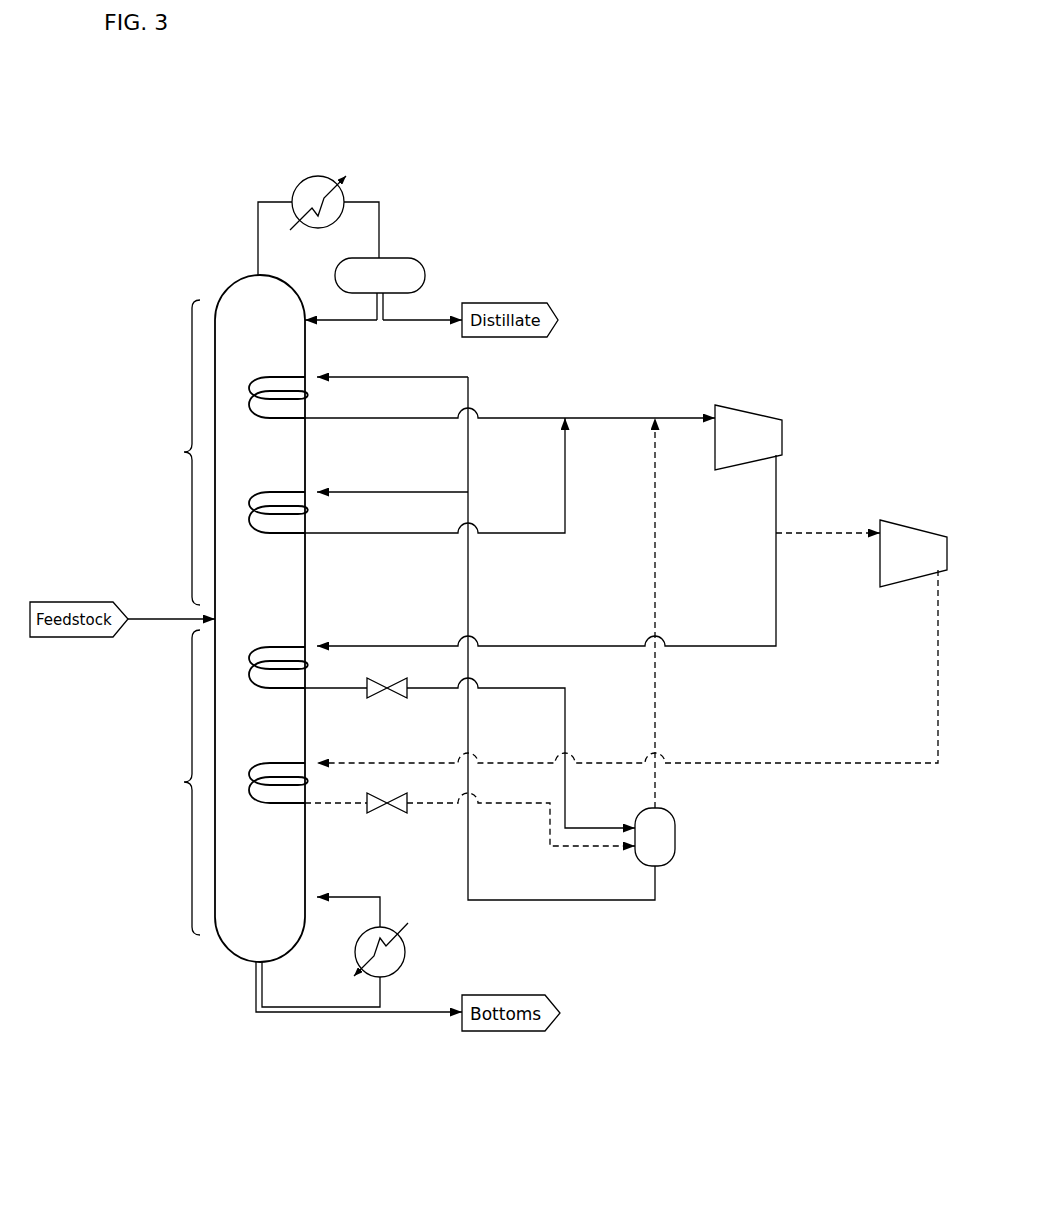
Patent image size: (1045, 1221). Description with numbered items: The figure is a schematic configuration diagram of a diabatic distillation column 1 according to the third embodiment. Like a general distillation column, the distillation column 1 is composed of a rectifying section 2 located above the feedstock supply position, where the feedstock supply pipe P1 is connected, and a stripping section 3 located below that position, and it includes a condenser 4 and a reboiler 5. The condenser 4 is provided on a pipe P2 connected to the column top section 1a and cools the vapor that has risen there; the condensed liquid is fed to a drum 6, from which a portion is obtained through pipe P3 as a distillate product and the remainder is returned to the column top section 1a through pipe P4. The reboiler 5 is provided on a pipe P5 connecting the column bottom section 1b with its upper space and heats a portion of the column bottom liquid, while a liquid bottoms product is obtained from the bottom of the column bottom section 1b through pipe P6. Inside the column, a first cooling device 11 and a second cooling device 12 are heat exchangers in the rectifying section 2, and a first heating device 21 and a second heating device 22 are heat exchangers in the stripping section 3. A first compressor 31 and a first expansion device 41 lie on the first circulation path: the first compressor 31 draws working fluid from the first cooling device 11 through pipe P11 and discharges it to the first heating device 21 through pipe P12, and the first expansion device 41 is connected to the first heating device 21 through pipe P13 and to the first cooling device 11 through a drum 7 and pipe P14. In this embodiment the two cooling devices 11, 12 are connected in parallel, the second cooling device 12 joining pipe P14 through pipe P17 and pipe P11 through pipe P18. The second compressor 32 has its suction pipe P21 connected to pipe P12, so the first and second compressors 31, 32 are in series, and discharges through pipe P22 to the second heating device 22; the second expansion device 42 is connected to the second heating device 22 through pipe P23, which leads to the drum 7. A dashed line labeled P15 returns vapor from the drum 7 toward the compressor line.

The diabatic distillation column 1 is at (718, 178).
The column top section 1a is at (243, 283).
The column bottom section 1b is at (240, 950).
The rectifying section 2 is at (182, 452).
The stripping section 3 is at (182, 782).
The condenser 4 is at (320, 176).
The reboiler 5 is at (407, 953).
The drum 6 is at (428, 275).
The drum 7 is at (677, 835).
The first cooling device 11 is at (278, 426).
The second cooling device 12 is at (278, 541).
The first heating device 21 is at (278, 636).
The second heating device 22 is at (278, 752).
The first compressor 31 is at (750, 406).
The second compressor 32 is at (912, 521).
The first expansion device 41 is at (393, 700).
The second expansion device 42 is at (393, 813).
The feedstock supply pipe P1 is at (155, 617).
The pipe P2 is at (258, 224).
The pipe P3 is at (424, 322).
The pipe P4 is at (349, 322).
The pipe P5 is at (349, 897).
The pipe P6 is at (318, 1014).
The pipe P11 is at (518, 418).
The pipe P12 is at (580, 646).
The pipe P13 is at (520, 690).
The pipe P14 is at (468, 583).
The receiver vapor line P15 is at (655, 536).
The pipe P17 is at (398, 492).
The pipe P18 is at (565, 480).
The pipe P21 is at (828, 533).
The pipe P22 is at (793, 763).
The pipe P23 is at (506, 805).